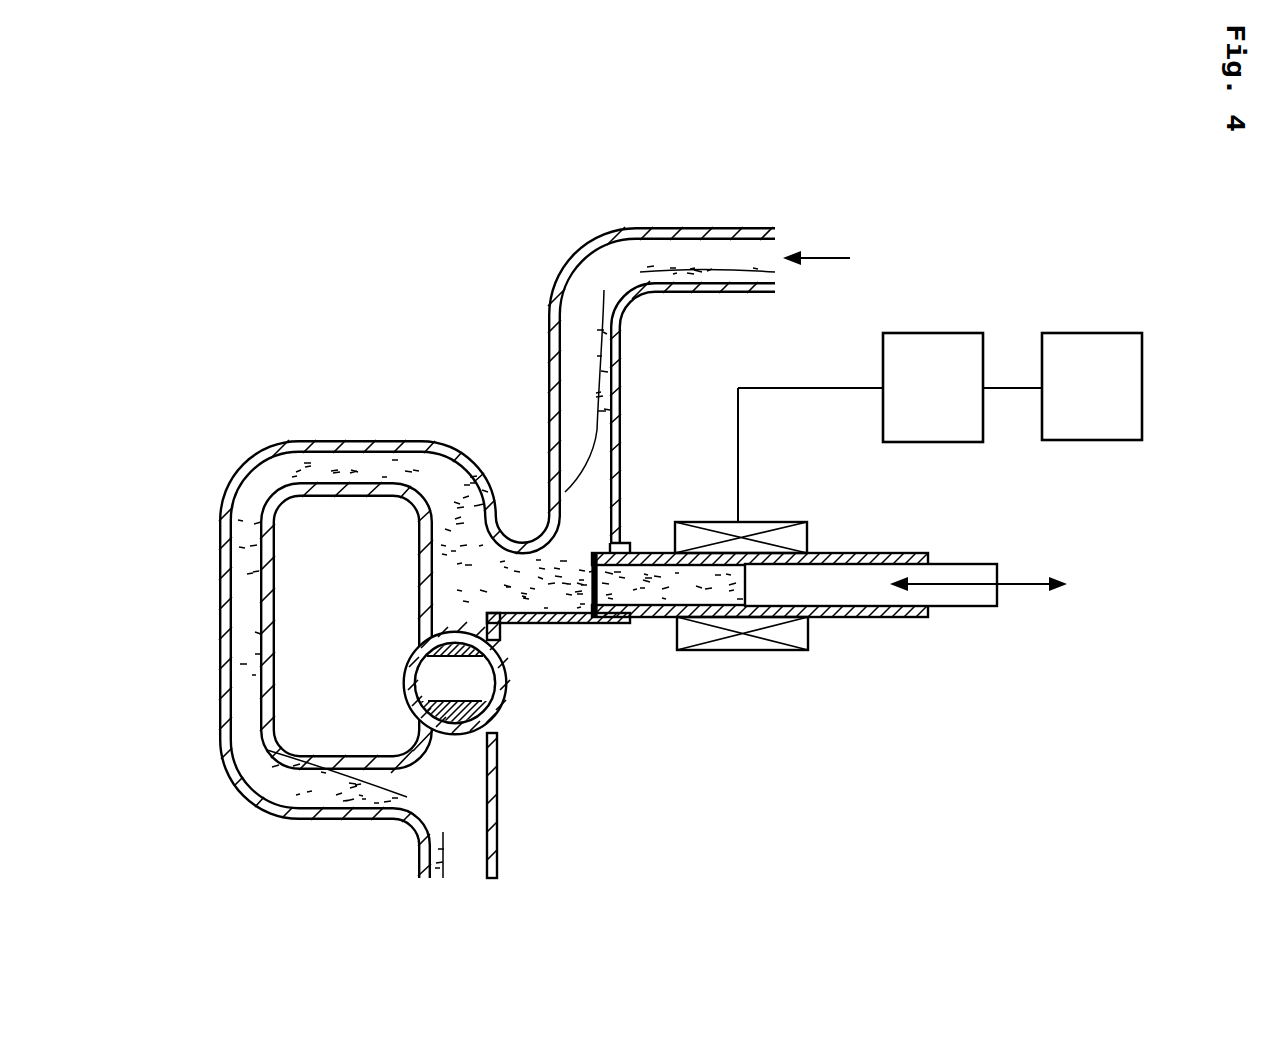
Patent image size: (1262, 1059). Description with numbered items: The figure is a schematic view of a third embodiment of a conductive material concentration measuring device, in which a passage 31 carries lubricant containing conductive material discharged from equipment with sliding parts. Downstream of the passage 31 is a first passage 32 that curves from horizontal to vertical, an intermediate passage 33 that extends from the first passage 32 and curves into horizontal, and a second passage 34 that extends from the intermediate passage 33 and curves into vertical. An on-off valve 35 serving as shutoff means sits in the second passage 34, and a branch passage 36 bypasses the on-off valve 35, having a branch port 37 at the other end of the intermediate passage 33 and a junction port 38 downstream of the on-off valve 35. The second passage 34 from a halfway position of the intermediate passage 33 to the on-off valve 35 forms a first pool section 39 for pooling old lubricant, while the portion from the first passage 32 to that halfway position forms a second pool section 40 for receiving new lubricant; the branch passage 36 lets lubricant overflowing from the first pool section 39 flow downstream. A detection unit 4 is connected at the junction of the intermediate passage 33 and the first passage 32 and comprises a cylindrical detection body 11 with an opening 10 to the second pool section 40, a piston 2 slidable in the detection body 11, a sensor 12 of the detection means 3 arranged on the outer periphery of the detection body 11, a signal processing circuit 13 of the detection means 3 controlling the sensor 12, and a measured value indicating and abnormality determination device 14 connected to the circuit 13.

The piston 2 is at (973, 632).
The detection means 3 is at (842, 525).
The detection unit 4 is at (929, 673).
The opening 10 is at (593, 596).
The detection body 11 is at (852, 620).
The sensor 12 is at (745, 650).
The signal processing circuit 13 is at (965, 332).
The measured value indicating and abnormality determination device 14 is at (1130, 332).
The passage 31 is at (487, 274).
The first passage 32 is at (548, 337).
The intermediate passage 33 is at (520, 543).
The second passage 34 is at (420, 618).
The on-off valve 35 is at (507, 705).
The branch passage 36 is at (220, 702).
The branch port 37 is at (436, 540).
The junction port 38 is at (420, 786).
The first pool section 39 is at (433, 588).
The second pool section 40 is at (552, 560).